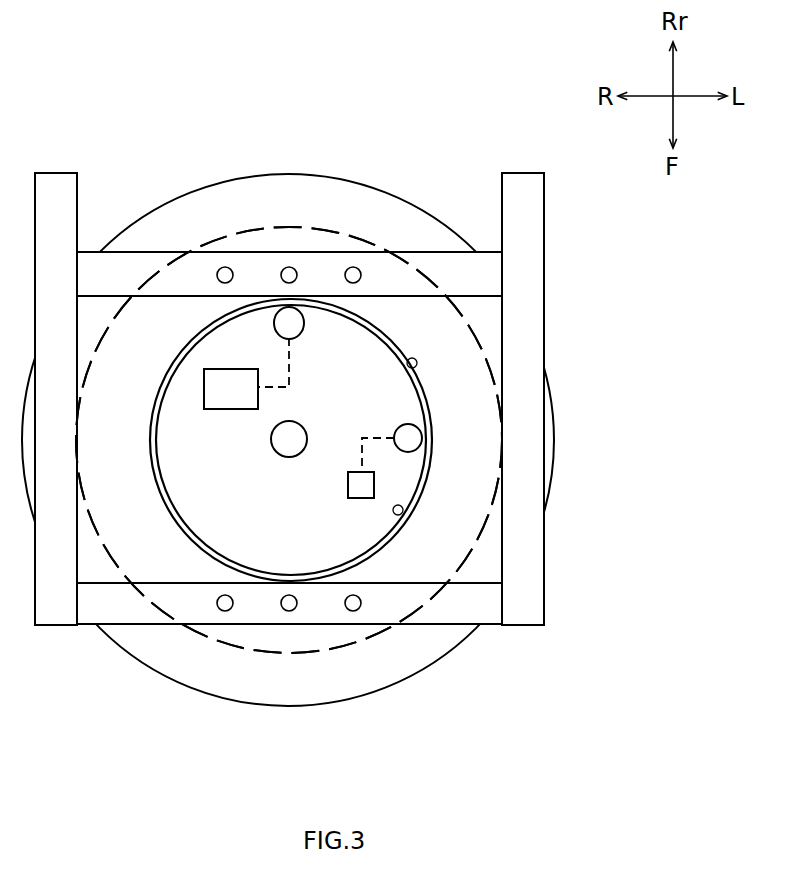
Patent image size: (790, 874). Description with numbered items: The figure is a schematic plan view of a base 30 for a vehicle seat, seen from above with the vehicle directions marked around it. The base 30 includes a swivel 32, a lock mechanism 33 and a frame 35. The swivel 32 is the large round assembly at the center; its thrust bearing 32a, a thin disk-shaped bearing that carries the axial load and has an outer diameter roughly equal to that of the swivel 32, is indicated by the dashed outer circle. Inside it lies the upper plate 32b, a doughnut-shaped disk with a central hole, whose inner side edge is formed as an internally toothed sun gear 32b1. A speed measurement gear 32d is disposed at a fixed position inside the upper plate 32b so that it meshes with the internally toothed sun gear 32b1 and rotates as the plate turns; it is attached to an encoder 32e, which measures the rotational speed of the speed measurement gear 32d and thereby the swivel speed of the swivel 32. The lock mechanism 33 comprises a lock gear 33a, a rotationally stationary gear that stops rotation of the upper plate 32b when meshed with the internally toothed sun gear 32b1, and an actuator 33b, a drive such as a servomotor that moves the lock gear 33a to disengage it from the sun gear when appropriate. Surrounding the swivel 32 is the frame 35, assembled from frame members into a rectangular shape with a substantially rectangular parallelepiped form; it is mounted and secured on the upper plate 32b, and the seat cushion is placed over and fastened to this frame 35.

The base 30 is at (418, 128).
The swivel 32 is at (105, 343).
The thrust bearing 32a is at (272, 230).
The upper plate 32b is at (408, 364).
The internally toothed sun gear 32b1 is at (403, 514).
The speed measurement gear 32d is at (406, 424).
The encoder 32e is at (352, 499).
The lock mechanism 33 is at (298, 380).
The lock gear 33a is at (300, 334).
The actuator 33b is at (231, 410).
The frame 35 is at (547, 319).